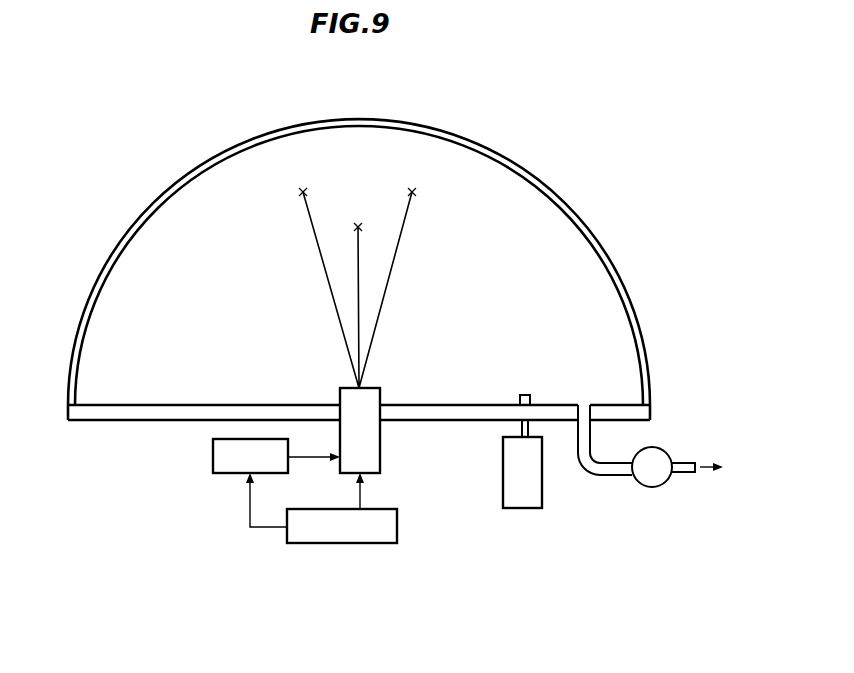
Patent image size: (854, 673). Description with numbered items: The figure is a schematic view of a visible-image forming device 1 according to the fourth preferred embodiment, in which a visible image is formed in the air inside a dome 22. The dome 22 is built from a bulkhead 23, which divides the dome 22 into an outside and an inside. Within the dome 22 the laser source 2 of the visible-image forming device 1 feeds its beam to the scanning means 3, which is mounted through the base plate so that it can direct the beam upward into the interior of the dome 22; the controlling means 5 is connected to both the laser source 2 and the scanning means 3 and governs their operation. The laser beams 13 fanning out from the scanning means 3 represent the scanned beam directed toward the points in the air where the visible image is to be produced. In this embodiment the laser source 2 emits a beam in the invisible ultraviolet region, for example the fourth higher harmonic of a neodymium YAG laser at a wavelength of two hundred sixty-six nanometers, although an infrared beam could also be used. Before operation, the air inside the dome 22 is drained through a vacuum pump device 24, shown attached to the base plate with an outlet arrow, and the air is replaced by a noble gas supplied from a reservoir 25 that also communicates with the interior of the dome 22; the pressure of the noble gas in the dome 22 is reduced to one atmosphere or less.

The visible-image forming device 1 is at (417, 506).
The laser source 2 is at (232, 474).
The scanning means 3 is at (380, 455).
The controlling means 5 is at (345, 544).
The light beams 13 is at (433, 194).
The dome 22 is at (440, 126).
The bulkhead 23 is at (268, 135).
The vacuum pump device 24 is at (642, 480).
The reservoir 25 is at (542, 490).